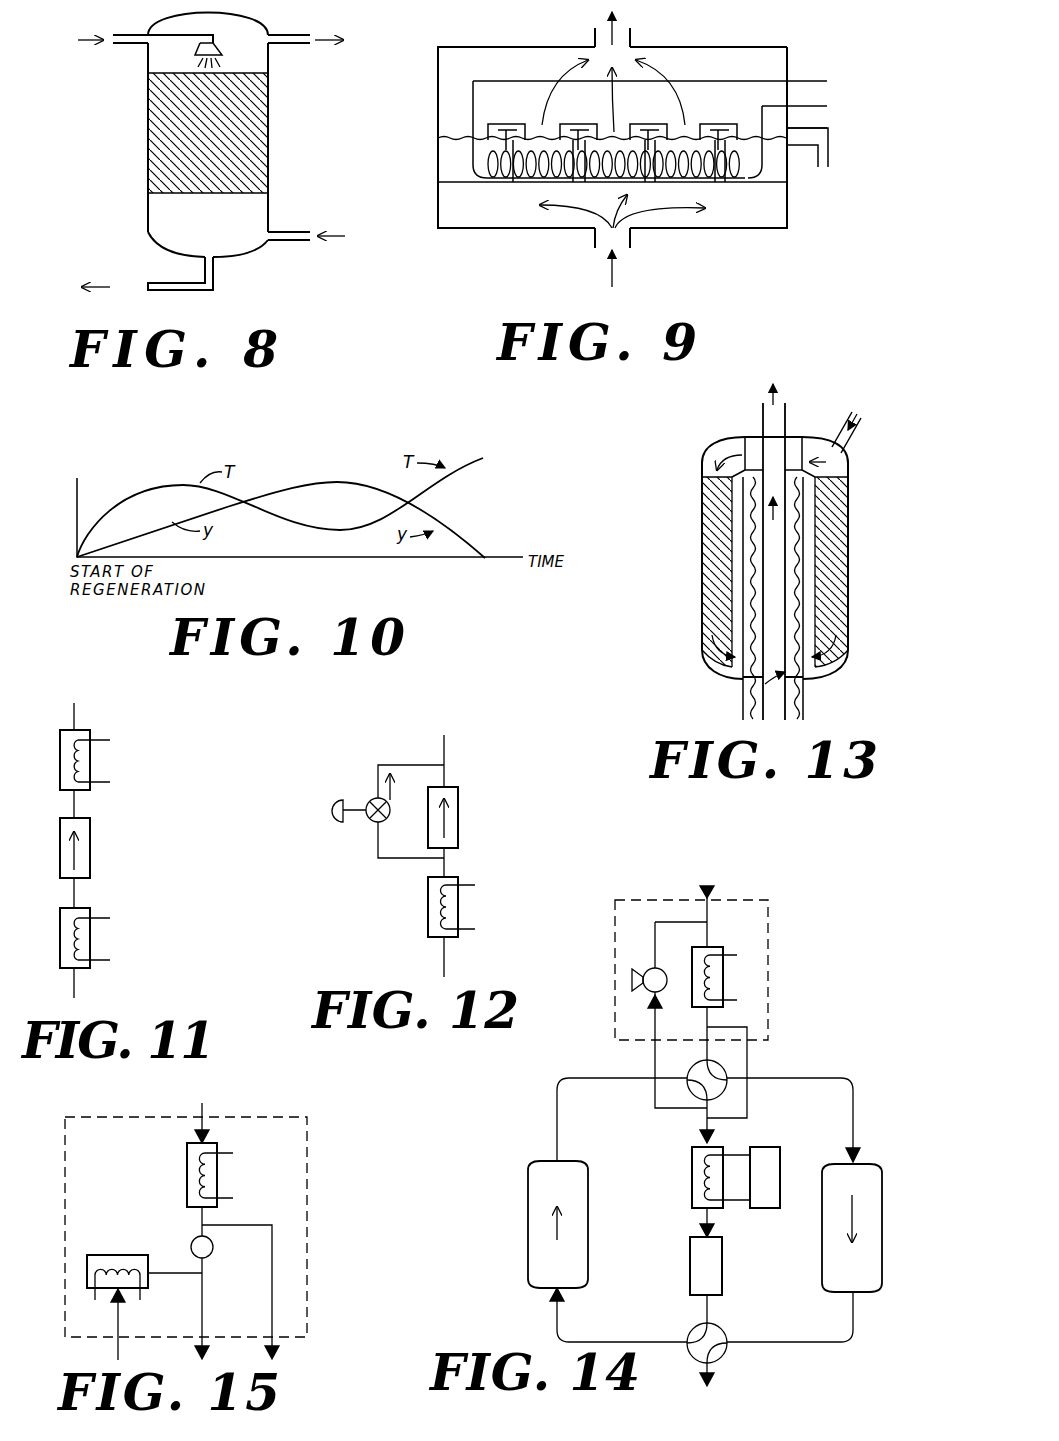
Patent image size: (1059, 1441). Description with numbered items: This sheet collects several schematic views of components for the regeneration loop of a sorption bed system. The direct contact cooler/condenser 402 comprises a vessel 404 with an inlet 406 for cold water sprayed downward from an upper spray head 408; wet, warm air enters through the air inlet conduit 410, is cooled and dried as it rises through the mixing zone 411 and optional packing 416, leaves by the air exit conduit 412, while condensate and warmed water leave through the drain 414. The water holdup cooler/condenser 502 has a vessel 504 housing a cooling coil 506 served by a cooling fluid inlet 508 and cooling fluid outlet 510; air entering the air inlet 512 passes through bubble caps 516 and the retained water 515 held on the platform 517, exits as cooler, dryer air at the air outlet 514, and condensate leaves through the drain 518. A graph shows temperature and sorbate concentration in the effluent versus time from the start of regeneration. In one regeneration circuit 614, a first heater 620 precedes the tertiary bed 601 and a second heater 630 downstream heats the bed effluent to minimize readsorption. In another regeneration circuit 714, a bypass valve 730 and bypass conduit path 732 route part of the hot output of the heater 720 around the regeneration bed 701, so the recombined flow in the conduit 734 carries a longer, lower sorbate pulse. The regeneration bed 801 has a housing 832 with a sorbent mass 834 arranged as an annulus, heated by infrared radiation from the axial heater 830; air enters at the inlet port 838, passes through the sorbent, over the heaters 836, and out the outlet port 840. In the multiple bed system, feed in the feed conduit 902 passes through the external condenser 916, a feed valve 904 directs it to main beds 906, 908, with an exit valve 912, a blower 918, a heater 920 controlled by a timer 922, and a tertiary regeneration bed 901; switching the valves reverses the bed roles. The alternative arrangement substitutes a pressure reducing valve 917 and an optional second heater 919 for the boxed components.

In FIG. 8, the direct contact cooler/condenser 402 is at (274, 133).
In FIG. 8, the vessel 404 is at (148, 150).
In FIG. 8, the inlet 406 is at (122, 35).
In FIG. 8, the upper spray head 408 is at (222, 46).
In FIG. 8, the air inlet conduit 410 is at (300, 243).
In FIG. 8, the mixing zone 411 is at (228, 178).
In FIG. 8, the air exit conduit 412 is at (290, 38).
In FIG. 8, the drain 414 is at (213, 273).
In FIG. 8, the packing 416 is at (243, 108).
In FIG. 9, the cooler/condenser 502 is at (792, 222).
In FIG. 9, the vessel 504 is at (520, 230).
In FIG. 9, the cooling coil 506 is at (537, 178).
In FIG. 9, the cooling fluid inlet 508 is at (798, 81).
In FIG. 9, the cooling fluid outlet 510 is at (820, 115).
In FIG. 9, the air inlet 512 is at (632, 246).
In FIG. 9, the air outlet 514 is at (632, 36).
In FIG. 9, the water 515 is at (460, 163).
In FIG. 9, the bubble caps 516 is at (728, 150).
In FIG. 9, the platform 517 is at (462, 185).
In FIG. 9, the drain 518 is at (828, 148).
In FIG. 11, the tertiary bed 601 is at (90, 848).
In FIG. 11, the regeneration circuit 614 is at (80, 806).
In FIG. 11, the first heater 620 is at (90, 937).
In FIG. 11, the second heater 630 is at (85, 732).
In FIG. 12, the regeneration bed 701 is at (458, 822).
In FIG. 12, the regeneration circuit 714 is at (449, 779).
In FIG. 12, the heater 720 is at (458, 906).
In FIG. 12, the bypass valve 730 is at (370, 800).
In FIG. 12, the bypass conduit path 732 is at (378, 838).
In FIG. 12, the conduit 734 is at (446, 757).
In FIG. 13, the regeneration bed 801 is at (852, 627).
In FIG. 13, the heater 830 is at (752, 497).
In FIG. 13, the housing 832 is at (700, 595).
In FIG. 13, the sorbent mass 834 is at (712, 540).
In FIG. 13, the heaters 836 is at (800, 500).
In FIG. 13, the inlet port 838 is at (852, 448).
In FIG. 13, the outlet port 840 is at (787, 415).
In FIG. 14, the tertiary regeneration bed 901 is at (722, 1262).
In FIG. 15, the feed conduit 902 is at (205, 1110).
In FIG. 14, the feed conduit 902 is at (709, 912).
In FIG. 14, the feed valve 904 is at (727, 1072).
In FIG. 14, the main bed 906 is at (822, 1225).
In FIG. 14, the main bed 908 is at (585, 1187).
In FIG. 14, the exit valve 912 is at (720, 1330).
In FIG. 15, the condenser 916 is at (112, 1255).
In FIG. 14, the condenser 916 is at (725, 977).
In FIG. 15, the pressure reducing valve 917 is at (210, 1252).
In FIG. 14, the blower 918 is at (640, 972).
In FIG. 15, the second heater 919 is at (217, 1173).
In FIG. 14, the heater 920 is at (692, 1160).
In FIG. 14, the timer 922 is at (765, 1150).